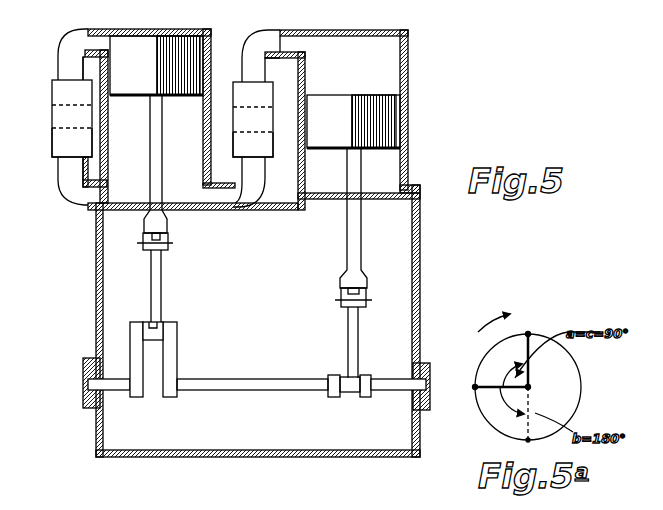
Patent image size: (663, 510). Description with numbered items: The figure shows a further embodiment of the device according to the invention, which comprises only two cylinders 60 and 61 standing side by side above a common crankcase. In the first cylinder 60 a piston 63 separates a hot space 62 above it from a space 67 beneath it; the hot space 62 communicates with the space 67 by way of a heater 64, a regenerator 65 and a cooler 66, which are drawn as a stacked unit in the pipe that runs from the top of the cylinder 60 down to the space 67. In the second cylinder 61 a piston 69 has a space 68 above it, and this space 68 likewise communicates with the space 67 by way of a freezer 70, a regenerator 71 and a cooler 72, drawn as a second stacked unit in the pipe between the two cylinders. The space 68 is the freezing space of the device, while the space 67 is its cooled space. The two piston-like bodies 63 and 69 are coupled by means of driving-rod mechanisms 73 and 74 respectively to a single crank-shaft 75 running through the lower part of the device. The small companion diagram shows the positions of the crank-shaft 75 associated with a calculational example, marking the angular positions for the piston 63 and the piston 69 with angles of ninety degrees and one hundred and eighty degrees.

In FIG. 5, the cylinder 60 is at (211, 57).
In FIG. 5, the cylinder 61 is at (408, 71).
In FIG. 5, the hot space 62 is at (84, 28).
In FIG. 5, the piston 63 is at (143, 80).
In FIG. 5A, the piston 63 is at (527, 355).
In FIG. 5, the heater 64 is at (61, 84).
In FIG. 5, the regenerator 65 is at (61, 118).
In FIG. 5, the cooler 66 is at (66, 147).
In FIG. 5, the space 67 is at (85, 202).
In FIG. 5, the space 68 is at (383, 52).
In FIG. 5, the piston 69 is at (400, 119).
In FIG. 5A, the piston 69 is at (487, 387).
In FIG. 5, the freezer 70 is at (262, 93).
In FIG. 5, the regenerator 71 is at (239, 117).
In FIG. 5, the cooler 72 is at (259, 150).
In FIG. 5, the driving-rod mechanism 73 is at (152, 270).
In FIG. 5, the driving-rod mechanism 74 is at (357, 320).
In FIG. 5, the crank-shaft 75 is at (272, 390).